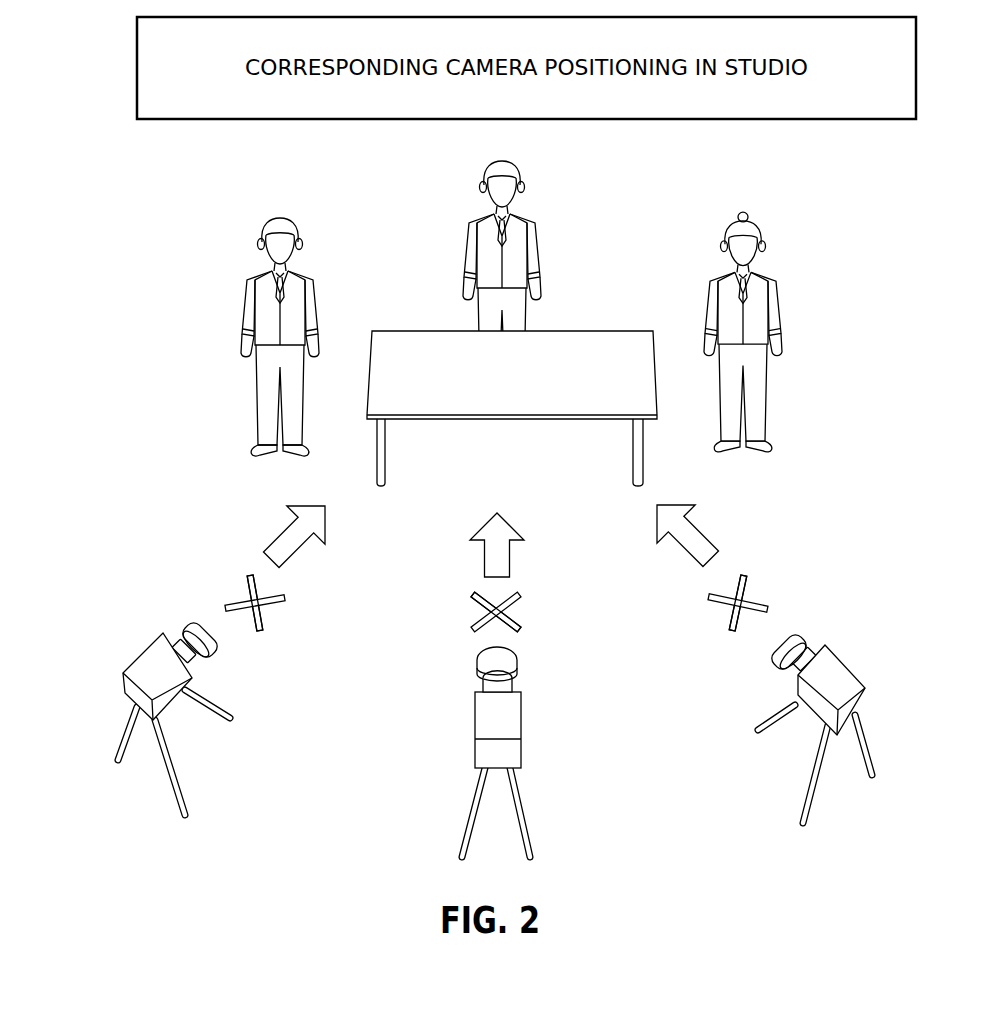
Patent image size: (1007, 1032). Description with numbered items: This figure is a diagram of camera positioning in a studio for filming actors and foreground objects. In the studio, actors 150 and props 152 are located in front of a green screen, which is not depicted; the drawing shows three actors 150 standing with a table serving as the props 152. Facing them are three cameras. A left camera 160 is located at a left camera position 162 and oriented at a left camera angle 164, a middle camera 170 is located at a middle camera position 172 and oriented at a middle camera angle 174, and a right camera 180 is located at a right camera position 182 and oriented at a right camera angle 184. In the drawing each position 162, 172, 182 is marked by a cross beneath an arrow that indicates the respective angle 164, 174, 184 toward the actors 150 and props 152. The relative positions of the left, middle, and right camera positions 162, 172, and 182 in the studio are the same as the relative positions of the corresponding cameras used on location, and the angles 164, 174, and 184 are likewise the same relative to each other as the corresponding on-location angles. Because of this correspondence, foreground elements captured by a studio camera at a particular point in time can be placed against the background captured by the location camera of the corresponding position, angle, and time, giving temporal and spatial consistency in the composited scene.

The actors 150 is at (245, 292).
The props 152 is at (586, 343).
The left camera 160 is at (123, 685).
The left camera position 162 is at (265, 618).
The left camera angle 164 is at (275, 540).
The middle camera 170 is at (523, 748).
The middle camera position 172 is at (520, 628).
The middle camera angle 174 is at (509, 563).
The right camera 180 is at (865, 703).
The right camera position 182 is at (748, 587).
The right camera angle 184 is at (700, 533).